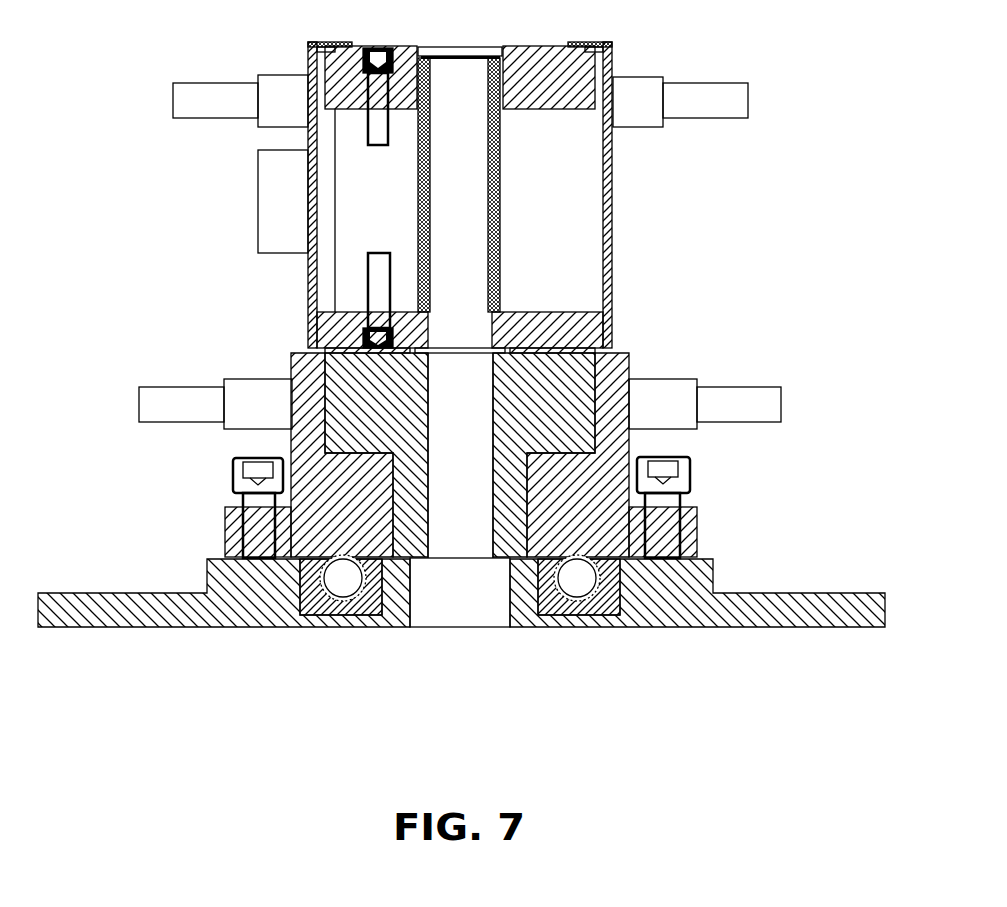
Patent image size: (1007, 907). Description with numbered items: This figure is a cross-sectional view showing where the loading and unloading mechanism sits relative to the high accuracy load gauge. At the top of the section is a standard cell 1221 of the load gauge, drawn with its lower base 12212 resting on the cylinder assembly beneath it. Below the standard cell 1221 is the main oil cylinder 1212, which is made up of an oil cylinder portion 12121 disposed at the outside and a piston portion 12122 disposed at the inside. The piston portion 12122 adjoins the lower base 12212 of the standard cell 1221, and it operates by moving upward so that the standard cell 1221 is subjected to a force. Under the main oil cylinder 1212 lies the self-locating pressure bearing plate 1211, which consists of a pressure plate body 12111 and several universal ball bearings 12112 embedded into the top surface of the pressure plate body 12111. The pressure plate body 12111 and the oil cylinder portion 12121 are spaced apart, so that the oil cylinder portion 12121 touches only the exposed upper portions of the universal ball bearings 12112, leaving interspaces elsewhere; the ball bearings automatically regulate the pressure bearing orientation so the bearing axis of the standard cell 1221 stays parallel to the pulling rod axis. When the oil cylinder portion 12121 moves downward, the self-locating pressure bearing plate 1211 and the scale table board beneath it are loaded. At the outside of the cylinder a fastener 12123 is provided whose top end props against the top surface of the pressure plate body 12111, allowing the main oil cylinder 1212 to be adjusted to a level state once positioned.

The self-locating pressure bearing plate 1211 is at (453, 567).
The pressure plate body 12111 is at (190, 607).
The universal ball bearing 12112 is at (333, 580).
The main oil cylinder 1212 is at (367, 438).
The oil cylinder portion 12121 is at (322, 478).
The piston portion 12122 is at (362, 390).
The fastener 12123 is at (411, 507).
The standard cell 1221 is at (352, 278).
The lower base 12212 is at (333, 328).